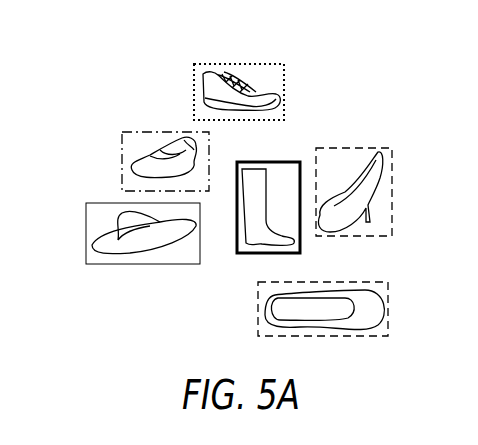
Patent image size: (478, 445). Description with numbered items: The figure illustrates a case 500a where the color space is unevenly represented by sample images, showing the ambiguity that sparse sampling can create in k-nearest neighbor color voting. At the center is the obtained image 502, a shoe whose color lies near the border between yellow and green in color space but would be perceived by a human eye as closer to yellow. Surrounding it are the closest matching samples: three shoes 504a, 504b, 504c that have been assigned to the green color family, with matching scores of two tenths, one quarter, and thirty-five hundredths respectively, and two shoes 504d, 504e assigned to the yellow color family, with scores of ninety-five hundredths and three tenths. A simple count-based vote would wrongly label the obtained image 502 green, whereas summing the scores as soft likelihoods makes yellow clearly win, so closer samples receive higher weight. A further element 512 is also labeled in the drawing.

The case 500a is at (332, 86).
The obtained image 502 is at (240, 254).
The shoe 504a is at (88, 248).
The shoe 504b is at (122, 177).
The shoe 504c is at (194, 86).
The shoe 504d is at (392, 165).
The shoe 504e is at (322, 337).
The display region 512 is at (477, 356).